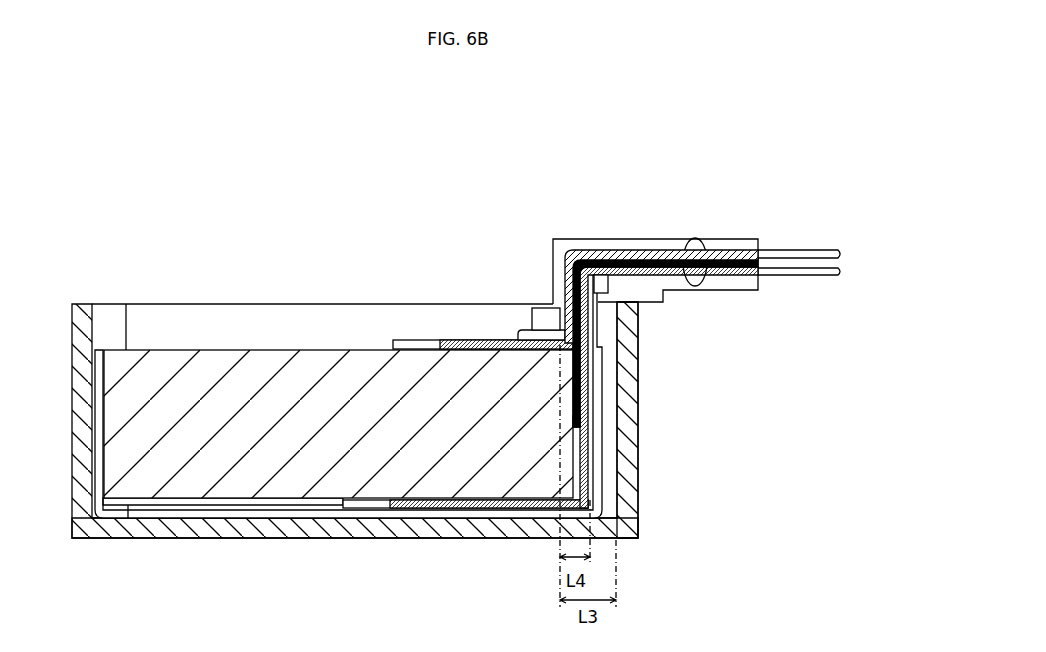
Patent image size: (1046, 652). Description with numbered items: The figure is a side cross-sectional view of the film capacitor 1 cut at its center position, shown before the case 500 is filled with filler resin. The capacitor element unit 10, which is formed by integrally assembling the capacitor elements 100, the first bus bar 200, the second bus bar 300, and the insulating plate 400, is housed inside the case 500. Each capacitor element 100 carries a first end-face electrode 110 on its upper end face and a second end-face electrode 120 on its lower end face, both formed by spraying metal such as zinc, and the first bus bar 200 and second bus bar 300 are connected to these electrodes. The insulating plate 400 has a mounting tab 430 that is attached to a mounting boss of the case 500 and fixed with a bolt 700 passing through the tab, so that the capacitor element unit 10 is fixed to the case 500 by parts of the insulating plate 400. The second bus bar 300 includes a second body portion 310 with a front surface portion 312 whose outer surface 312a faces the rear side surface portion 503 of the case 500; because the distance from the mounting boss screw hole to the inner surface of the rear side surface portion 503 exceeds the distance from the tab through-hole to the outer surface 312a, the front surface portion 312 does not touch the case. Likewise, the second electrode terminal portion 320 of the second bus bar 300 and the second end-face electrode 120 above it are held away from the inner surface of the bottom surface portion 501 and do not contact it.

The film capacitor 1 is at (745, 212).
The capacitor element unit 10 is at (380, 317).
The capacitor element 100 is at (322, 350).
The first end-face electrode 110 is at (217, 350).
The second end-face electrode 120 is at (234, 503).
The first bus bar 200 is at (453, 339).
The second bus bar 300 is at (600, 492).
The second body portion 310 is at (598, 352).
The front surface portion 312 is at (585, 397).
The outer surface 312a is at (590, 437).
The second electrode terminal portion 320 is at (425, 507).
The insulating plate 400 is at (625, 238).
The mounting tab 430 is at (598, 332).
The case 500 is at (118, 303).
The bottom surface portion 501 is at (313, 538).
The rear side surface portion 503 is at (640, 472).
The bolt 700 is at (543, 308).